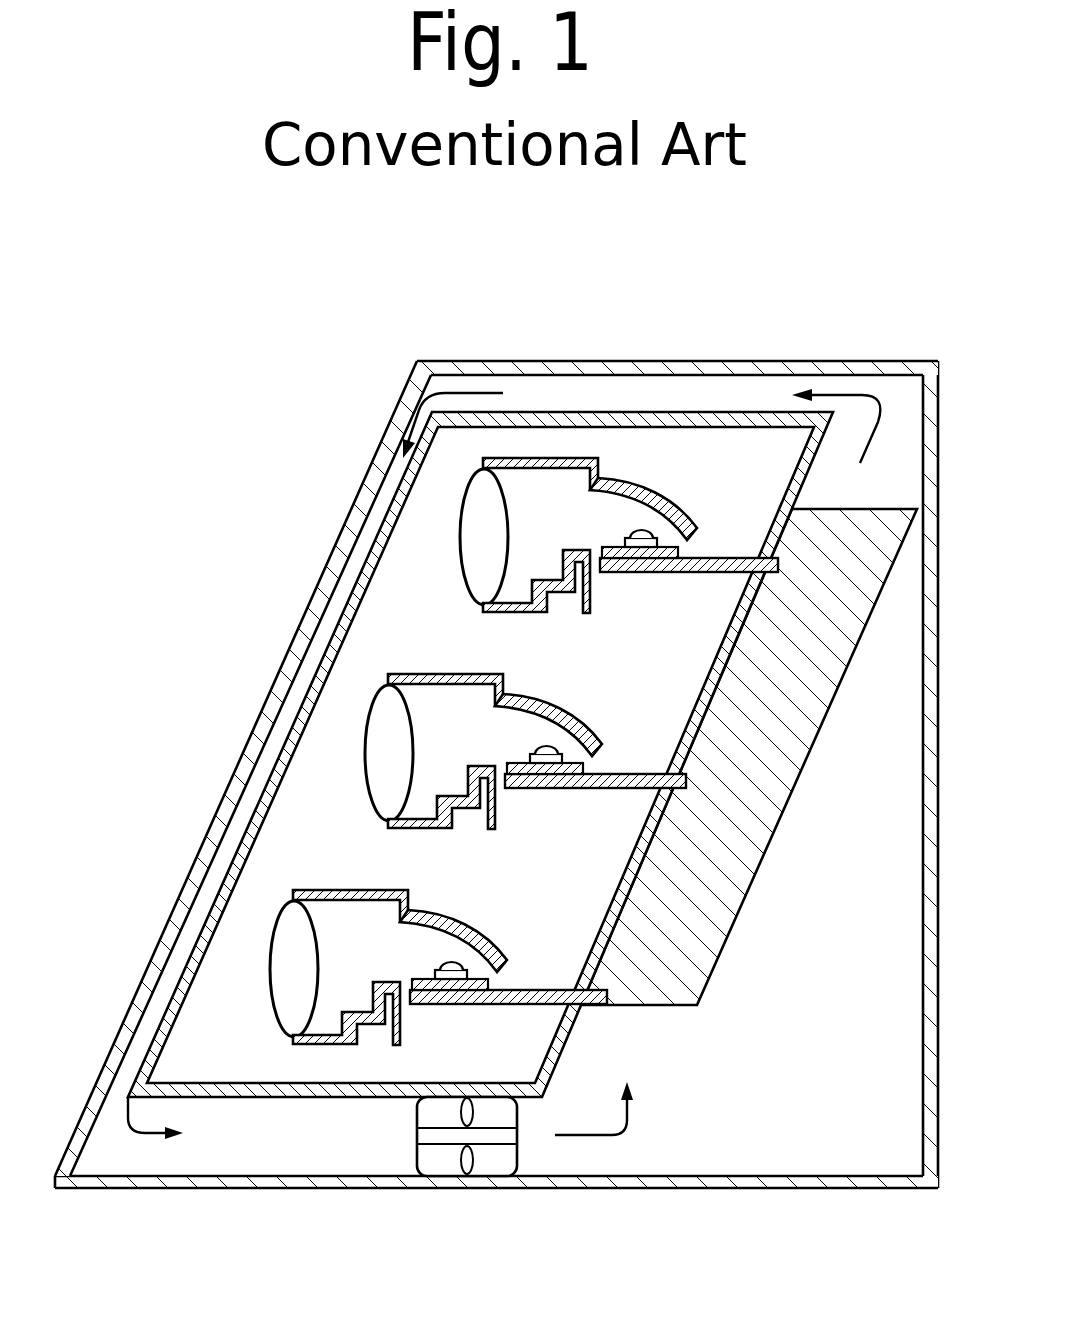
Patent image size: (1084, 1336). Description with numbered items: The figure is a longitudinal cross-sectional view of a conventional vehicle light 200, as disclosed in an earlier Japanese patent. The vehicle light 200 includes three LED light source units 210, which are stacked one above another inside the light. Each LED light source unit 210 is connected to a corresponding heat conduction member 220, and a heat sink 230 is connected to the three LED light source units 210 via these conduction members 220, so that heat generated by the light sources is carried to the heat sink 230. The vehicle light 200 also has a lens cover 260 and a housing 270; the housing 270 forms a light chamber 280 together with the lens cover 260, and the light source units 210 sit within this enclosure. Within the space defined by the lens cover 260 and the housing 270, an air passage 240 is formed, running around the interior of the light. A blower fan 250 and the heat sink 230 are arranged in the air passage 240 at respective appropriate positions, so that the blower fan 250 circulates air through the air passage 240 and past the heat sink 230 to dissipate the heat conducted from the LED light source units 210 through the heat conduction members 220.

The vehicle light 200 is at (605, 292).
The LED light source unit 210 is at (452, 590).
The heat conduction member 220 is at (660, 573).
The heat sink 230 is at (780, 777).
The air passage 240 is at (326, 1178).
The blower fan 250 is at (487, 1163).
The lens cover 260 is at (275, 703).
The housing 270 is at (722, 370).
The light chamber 280 is at (815, 1099).